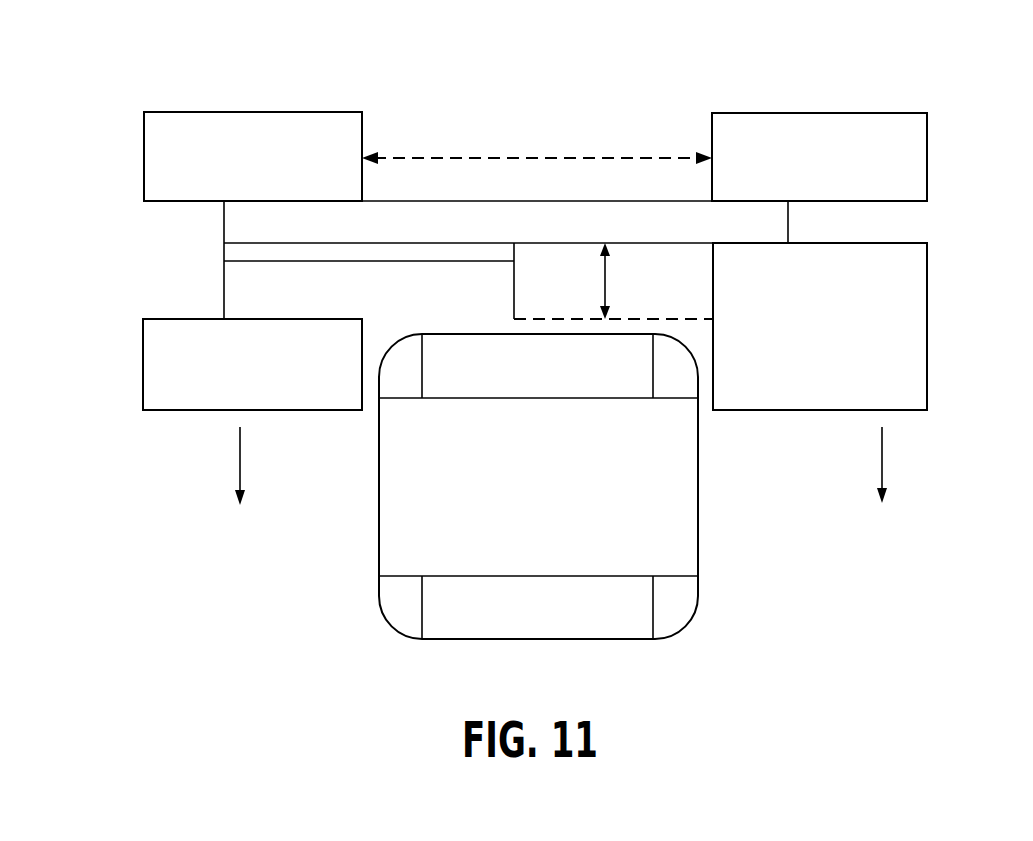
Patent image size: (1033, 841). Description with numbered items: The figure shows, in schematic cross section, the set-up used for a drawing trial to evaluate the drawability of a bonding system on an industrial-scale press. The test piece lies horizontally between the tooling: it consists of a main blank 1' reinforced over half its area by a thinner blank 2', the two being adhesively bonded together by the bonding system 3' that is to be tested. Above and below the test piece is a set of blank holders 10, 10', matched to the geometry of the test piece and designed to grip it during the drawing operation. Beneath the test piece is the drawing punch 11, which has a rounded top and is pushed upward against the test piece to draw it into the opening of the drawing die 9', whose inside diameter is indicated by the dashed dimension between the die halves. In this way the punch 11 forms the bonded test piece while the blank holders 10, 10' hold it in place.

The main blank 1' is at (399, 260).
The reinforcing blank 2' is at (442, 260).
The bonding system 3' is at (432, 247).
The drawing die 9' is at (537, 100).
The blank holder 10 is at (820, 378).
The blank holder 10' is at (233, 414).
The drawing punch 11 is at (445, 493).